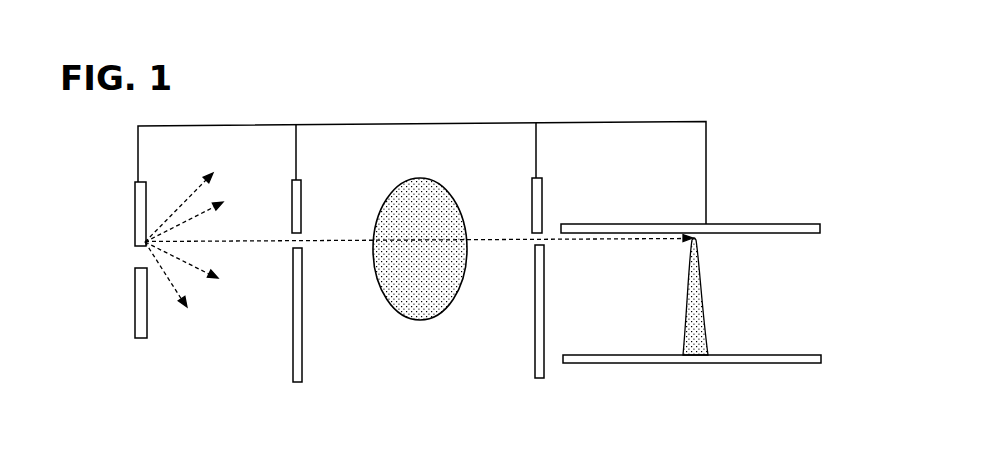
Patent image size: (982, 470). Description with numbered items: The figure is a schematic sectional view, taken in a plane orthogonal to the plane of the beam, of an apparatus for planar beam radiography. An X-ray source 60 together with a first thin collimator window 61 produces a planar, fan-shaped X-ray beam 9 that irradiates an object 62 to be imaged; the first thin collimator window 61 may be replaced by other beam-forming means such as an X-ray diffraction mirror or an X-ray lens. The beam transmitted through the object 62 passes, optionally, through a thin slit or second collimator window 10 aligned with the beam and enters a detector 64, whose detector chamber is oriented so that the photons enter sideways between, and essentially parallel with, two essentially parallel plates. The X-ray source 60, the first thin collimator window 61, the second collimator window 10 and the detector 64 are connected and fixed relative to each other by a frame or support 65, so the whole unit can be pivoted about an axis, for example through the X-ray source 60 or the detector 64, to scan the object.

The planar X-ray beam 9 is at (328, 232).
The second collimator window 10 is at (533, 249).
The X-ray source 60 is at (129, 252).
The first thin collimator window 61 is at (300, 252).
The object 62 is at (434, 274).
The detector 64 is at (627, 322).
The frame or support 65 is at (422, 162).